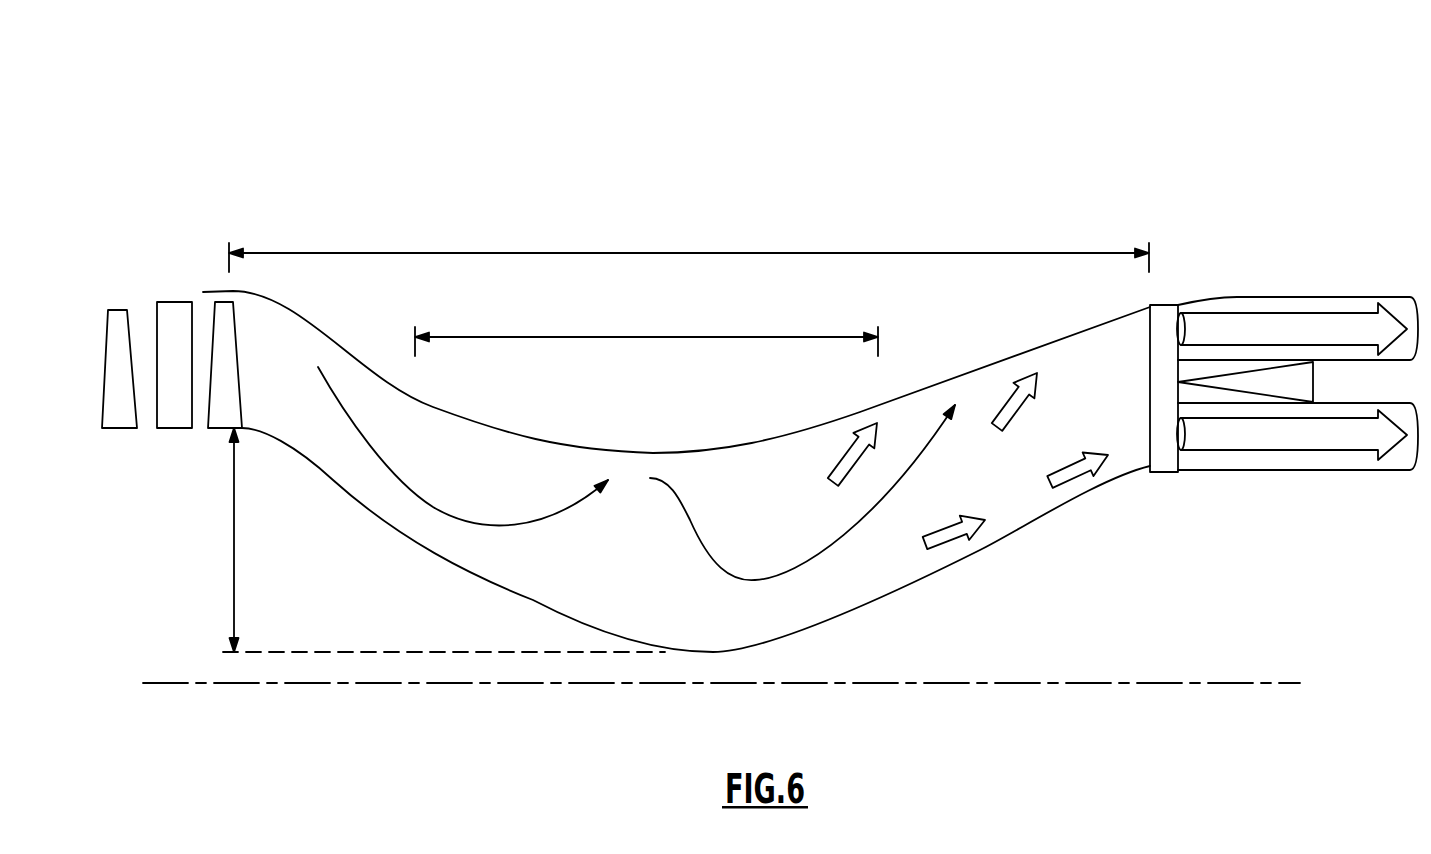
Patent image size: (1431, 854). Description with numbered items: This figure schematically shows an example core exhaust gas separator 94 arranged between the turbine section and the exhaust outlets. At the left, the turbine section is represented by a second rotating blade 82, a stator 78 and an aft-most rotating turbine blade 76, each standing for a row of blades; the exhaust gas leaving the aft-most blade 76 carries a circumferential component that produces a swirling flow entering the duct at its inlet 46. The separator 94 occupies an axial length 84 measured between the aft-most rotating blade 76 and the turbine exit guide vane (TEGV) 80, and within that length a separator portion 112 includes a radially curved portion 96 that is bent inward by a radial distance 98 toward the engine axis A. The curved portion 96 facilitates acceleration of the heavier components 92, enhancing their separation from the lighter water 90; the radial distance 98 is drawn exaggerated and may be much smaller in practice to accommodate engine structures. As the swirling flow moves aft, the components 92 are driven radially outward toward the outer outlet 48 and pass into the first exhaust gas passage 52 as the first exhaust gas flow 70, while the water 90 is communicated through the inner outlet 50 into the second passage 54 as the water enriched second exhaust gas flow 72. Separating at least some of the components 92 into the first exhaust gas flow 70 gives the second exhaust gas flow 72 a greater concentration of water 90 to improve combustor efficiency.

The inlet of exhaust duct 46 is at (227, 292).
The outer outlet 48 is at (1177, 325).
The inner outlet 50 is at (1180, 447).
The first exhaust gas passage 52 is at (1348, 297).
The water rich exhaust pipe 54 is at (1348, 469).
The first exhaust gas flow 70 is at (1255, 310).
The second exhaust gas flow 72 is at (1250, 452).
The aft-most rotating turbine blade 76 is at (227, 428).
The stator 78 is at (175, 428).
The turbine exit guide vane (TEGV) 80 is at (1167, 473).
The second rotating blade 82 is at (112, 415).
The axial length 84 is at (677, 253).
The water 90 is at (950, 540).
The components 92 is at (830, 468).
The separator 94 is at (1013, 102).
The radially curved portion 96 is at (660, 337).
The radial distance 98 is at (235, 522).
The separator portion 112 is at (442, 543).
The engine axis A is at (1013, 683).